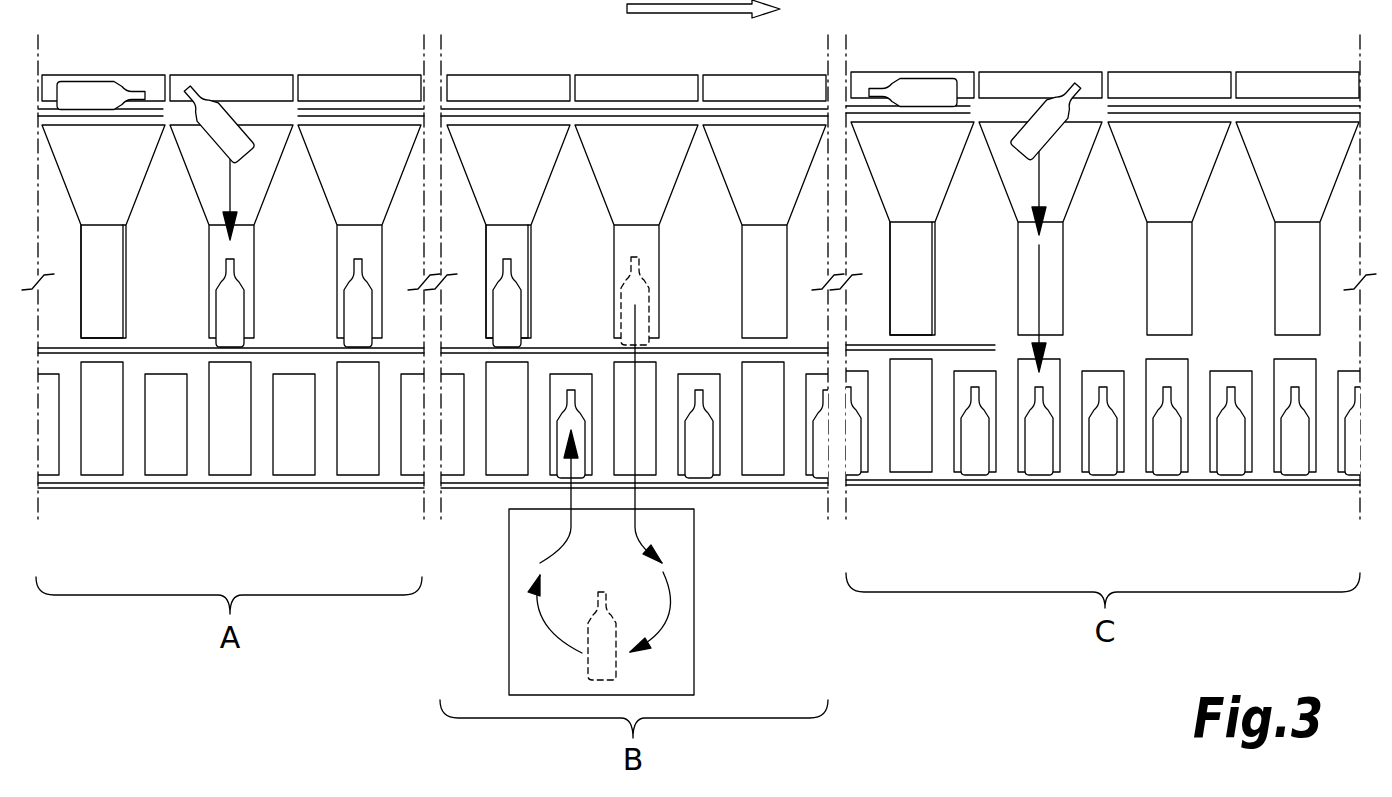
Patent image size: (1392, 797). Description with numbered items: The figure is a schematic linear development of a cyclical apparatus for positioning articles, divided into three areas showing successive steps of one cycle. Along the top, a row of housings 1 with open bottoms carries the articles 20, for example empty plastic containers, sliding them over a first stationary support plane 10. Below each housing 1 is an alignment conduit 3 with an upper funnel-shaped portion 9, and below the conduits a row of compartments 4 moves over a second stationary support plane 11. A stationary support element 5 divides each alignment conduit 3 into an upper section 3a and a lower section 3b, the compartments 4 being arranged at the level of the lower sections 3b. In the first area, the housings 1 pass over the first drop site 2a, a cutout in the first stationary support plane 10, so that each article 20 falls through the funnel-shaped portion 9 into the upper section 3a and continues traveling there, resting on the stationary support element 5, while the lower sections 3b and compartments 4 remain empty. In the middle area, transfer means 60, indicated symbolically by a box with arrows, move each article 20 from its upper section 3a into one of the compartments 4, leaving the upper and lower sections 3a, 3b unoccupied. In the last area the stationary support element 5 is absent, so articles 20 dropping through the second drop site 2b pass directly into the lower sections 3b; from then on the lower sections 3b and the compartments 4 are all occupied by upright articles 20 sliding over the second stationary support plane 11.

The housing 1 is at (237, 80).
The first drop site 2a is at (257, 107).
The second drop site 2b is at (1012, 107).
The alignment conduit 3 is at (263, 260).
The upper section of the alignment conduit 3a is at (209, 292).
The lower section of the alignment conduit 3b is at (229, 475).
The compartment 4 is at (167, 475).
The stationary support element 5 is at (177, 348).
The funnel-shaped portion 9 is at (195, 155).
The first stationary support plane 10 is at (355, 108).
The second stationary support plane 11 is at (392, 490).
The article 20 is at (88, 93).
The transfer means 60 is at (694, 652).